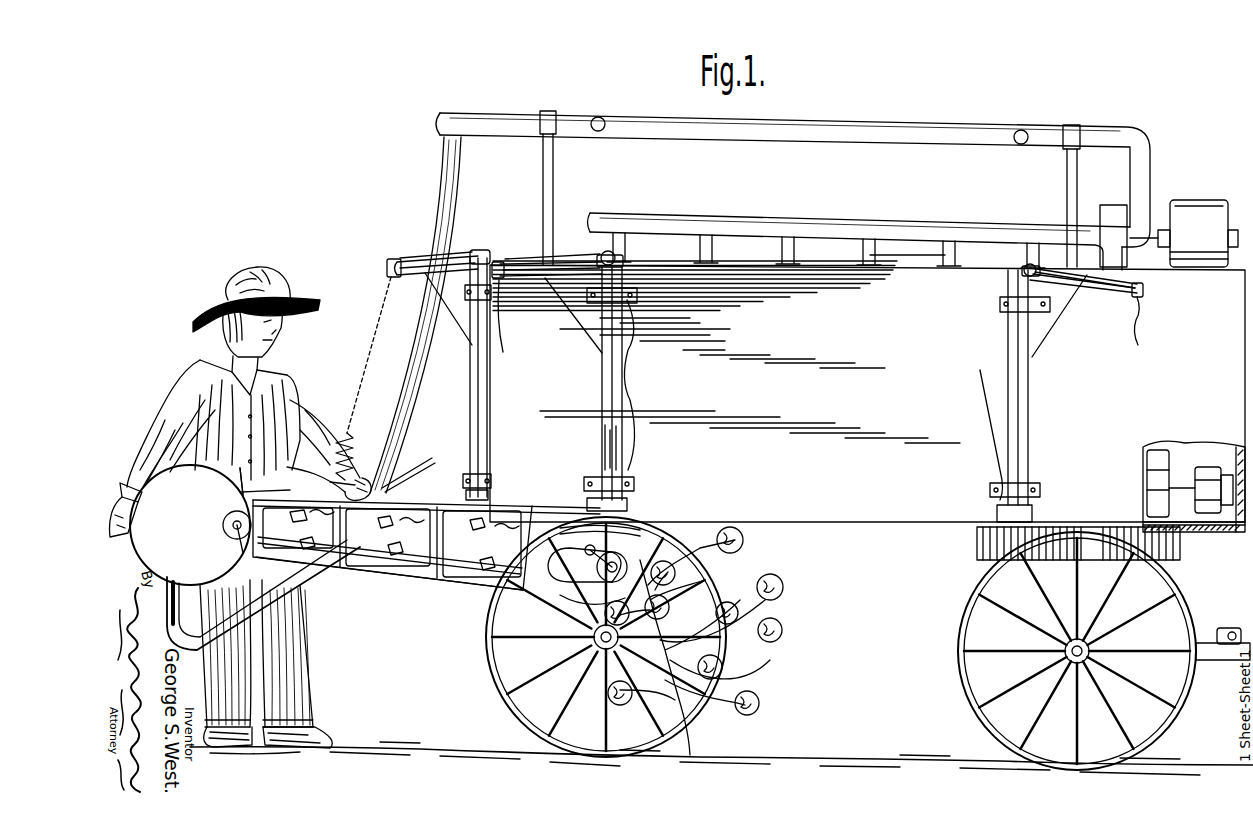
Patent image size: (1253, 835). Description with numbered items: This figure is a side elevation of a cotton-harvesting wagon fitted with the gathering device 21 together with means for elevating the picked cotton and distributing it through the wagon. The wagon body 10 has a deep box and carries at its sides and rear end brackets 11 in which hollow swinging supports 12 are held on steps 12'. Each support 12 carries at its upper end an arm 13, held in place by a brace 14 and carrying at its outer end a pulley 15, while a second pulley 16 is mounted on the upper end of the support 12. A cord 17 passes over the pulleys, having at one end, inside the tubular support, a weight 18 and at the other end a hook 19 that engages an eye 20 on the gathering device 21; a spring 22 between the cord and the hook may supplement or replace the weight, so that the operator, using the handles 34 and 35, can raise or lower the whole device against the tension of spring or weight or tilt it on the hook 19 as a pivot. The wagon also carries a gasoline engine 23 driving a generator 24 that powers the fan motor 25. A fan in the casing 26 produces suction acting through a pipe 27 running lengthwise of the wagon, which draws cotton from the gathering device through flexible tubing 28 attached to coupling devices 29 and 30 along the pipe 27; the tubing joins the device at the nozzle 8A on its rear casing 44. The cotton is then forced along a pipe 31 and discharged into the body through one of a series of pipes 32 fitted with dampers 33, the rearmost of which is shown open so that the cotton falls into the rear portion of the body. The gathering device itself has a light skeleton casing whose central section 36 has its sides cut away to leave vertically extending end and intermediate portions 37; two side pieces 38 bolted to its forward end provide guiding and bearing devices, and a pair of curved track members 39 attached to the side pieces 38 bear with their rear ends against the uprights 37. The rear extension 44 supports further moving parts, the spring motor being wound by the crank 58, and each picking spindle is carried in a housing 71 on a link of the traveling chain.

The discharge chute 8A is at (263, 595).
The wagon body 10 is at (838, 515).
The brackets 11 is at (632, 362).
The swinging support 12 is at (748, 381).
The step 12' is at (726, 493).
The arm 13 is at (407, 278).
The brace 14 is at (452, 320).
The pulley 15 is at (388, 264).
The second pulley 16 is at (478, 256).
The cord 17 is at (420, 260).
The weight 18 is at (603, 452).
The hook 19 is at (350, 415).
The eye 20 is at (330, 483).
The gathering device 21 is at (408, 590).
The spring 22 is at (345, 438).
The gasoline engine 23 is at (1172, 477).
The generator 24 is at (1208, 530).
The fan motor 25 is at (1215, 205).
The fan casing 26 is at (1118, 218).
The pipe 27 is at (843, 124).
The flexible tubing 28 is at (410, 411).
The coupling device 29 is at (600, 118).
The coupling device 30 is at (1020, 130).
The pipe 31 is at (982, 224).
The discharge pipes 32 is at (942, 266).
The dampers 33 is at (907, 252).
The handle 34 is at (395, 481).
The handle 35 is at (180, 470).
The central section 36 is at (440, 585).
The vertically extending portions 37 is at (425, 540).
The side pieces 38 is at (560, 594).
The curved track members 39 is at (640, 527).
The extension 44 is at (237, 466).
The crank 58 is at (210, 545).
The housing 71 is at (478, 528).